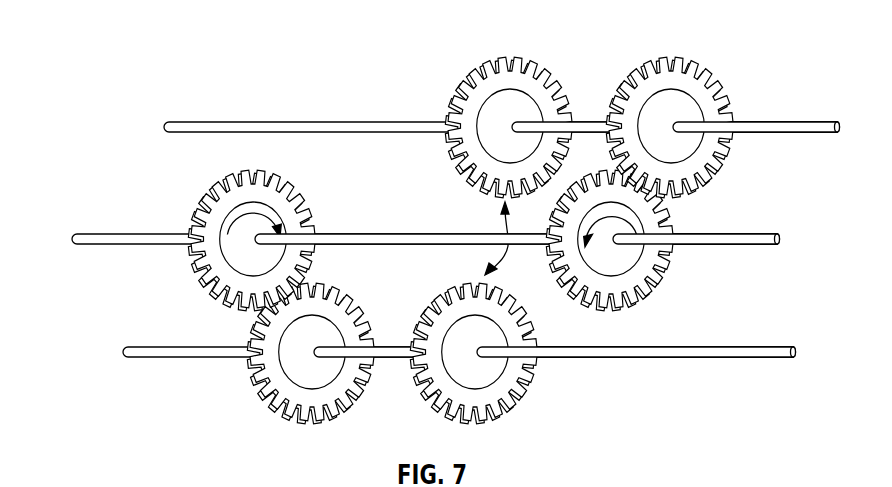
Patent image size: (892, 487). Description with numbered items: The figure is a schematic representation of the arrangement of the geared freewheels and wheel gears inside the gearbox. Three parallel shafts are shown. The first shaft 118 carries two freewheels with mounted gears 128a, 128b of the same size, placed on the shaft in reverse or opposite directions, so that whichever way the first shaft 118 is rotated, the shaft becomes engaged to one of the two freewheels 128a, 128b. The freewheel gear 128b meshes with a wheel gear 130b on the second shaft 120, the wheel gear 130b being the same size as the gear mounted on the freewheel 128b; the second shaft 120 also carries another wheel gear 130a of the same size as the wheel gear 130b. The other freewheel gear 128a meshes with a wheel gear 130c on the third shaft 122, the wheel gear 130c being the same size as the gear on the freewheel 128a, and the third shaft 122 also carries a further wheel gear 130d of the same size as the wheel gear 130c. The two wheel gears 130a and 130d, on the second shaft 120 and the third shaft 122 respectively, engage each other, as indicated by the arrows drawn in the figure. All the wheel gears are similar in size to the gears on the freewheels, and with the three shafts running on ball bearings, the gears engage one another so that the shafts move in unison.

The first shaft 118 is at (72, 240).
The second shaft 120 is at (163, 125).
The third shaft 122 is at (123, 352).
The freewheel gear 128a is at (316, 206).
The freewheel gear 128b is at (666, 275).
The wheel gear 130a is at (558, 56).
The wheel gear 130b is at (720, 56).
The wheel gear 130c is at (244, 390).
The wheel gear 130d is at (533, 390).